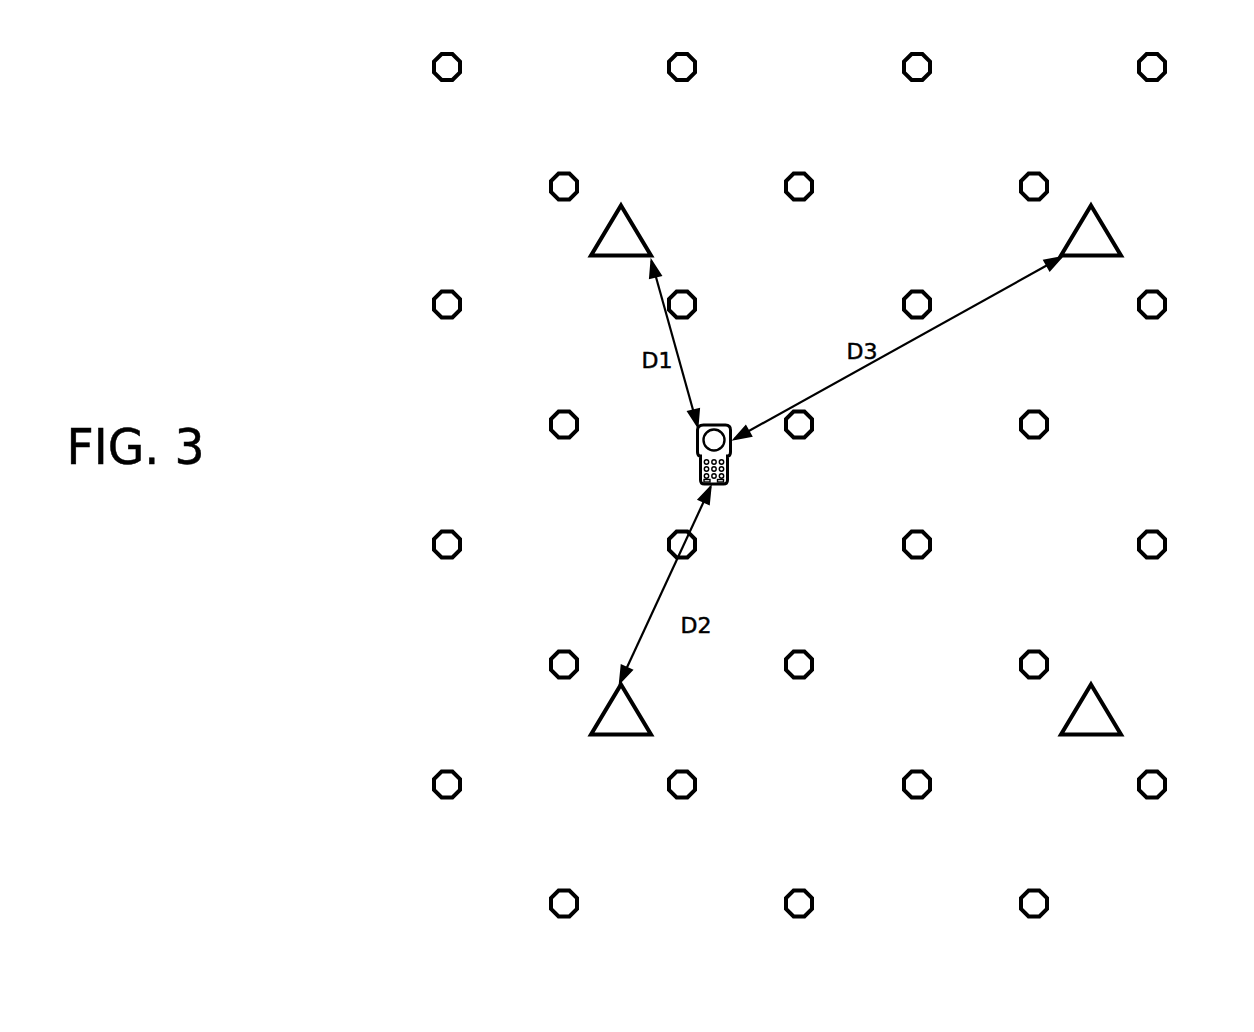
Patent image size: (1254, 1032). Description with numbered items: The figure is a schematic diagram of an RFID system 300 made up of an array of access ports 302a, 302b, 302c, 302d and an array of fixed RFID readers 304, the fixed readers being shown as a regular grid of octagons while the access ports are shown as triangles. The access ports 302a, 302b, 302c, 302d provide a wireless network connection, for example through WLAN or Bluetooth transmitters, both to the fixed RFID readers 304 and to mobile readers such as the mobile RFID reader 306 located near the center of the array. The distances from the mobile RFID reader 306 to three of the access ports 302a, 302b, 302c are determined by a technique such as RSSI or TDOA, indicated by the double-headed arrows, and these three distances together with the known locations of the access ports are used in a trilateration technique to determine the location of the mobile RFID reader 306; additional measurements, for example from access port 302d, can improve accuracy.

The RFID system 300 is at (310, 880).
The access port 302a is at (597, 237).
The access port 302b is at (1068, 237).
The access port 302c is at (597, 711).
The access port 302d is at (1068, 711).
The fixed RFID reader 304 is at (435, 52).
The mobile RFID reader 306 is at (708, 421).